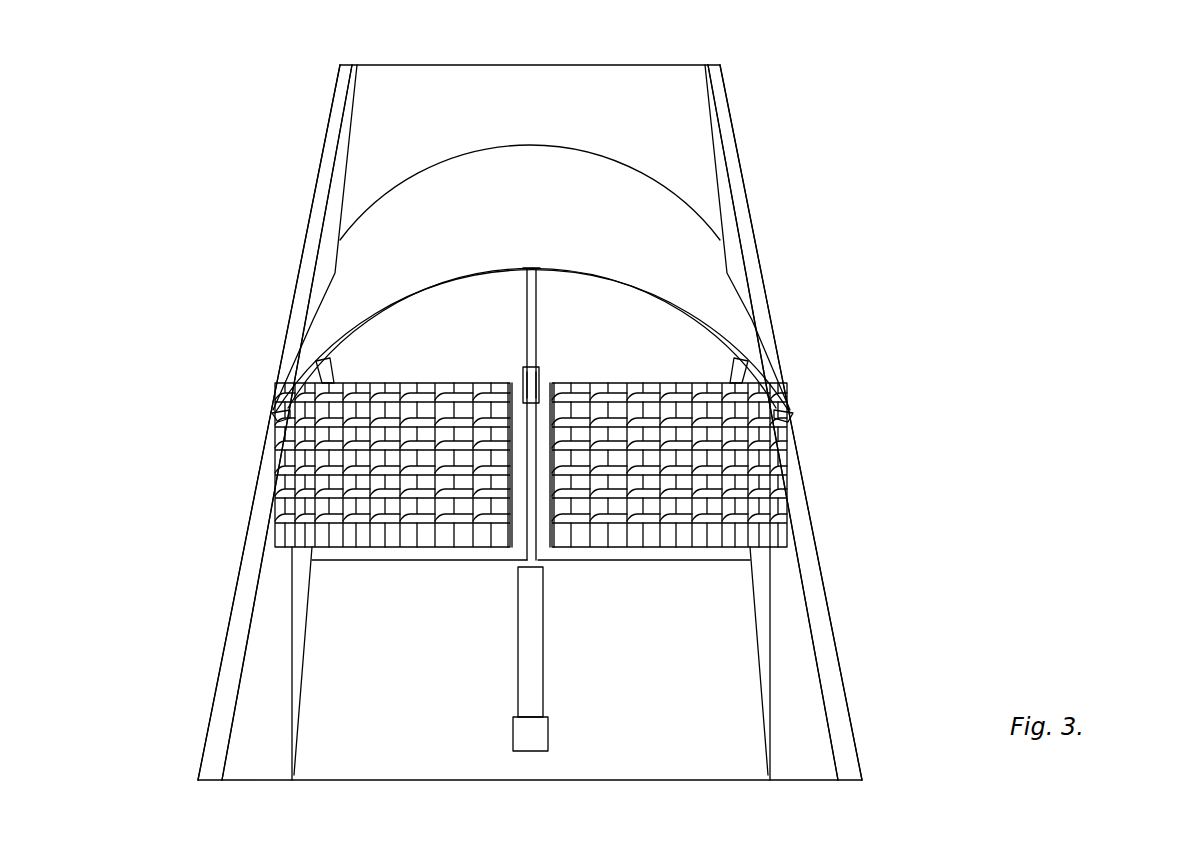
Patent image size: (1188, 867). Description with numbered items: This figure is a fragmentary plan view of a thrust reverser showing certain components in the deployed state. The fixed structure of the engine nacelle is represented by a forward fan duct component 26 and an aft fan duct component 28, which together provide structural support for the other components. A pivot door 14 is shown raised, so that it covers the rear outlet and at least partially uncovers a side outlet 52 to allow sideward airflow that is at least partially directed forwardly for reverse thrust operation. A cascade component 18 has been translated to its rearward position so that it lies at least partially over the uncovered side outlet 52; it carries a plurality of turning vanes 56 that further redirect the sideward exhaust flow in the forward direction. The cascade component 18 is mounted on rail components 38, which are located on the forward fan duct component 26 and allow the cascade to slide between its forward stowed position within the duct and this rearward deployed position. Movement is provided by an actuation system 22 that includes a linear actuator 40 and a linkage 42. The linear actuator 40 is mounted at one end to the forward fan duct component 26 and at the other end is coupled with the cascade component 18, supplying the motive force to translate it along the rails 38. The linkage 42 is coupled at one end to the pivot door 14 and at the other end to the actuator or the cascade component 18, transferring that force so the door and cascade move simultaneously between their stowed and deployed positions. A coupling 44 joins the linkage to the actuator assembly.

The pivot door 14 is at (692, 275).
The cascade component 18 is at (806, 528).
The actuation system 22 is at (525, 755).
The forward fan duct component 26 is at (710, 763).
The aft fan duct component 28 is at (687, 117).
The rail component 38 is at (295, 633).
The linear actuator 40 is at (533, 693).
The linkage 42 is at (522, 318).
The coupling 44 is at (537, 378).
The side outlet 52 is at (402, 350).
The turning vane 56 is at (760, 459).